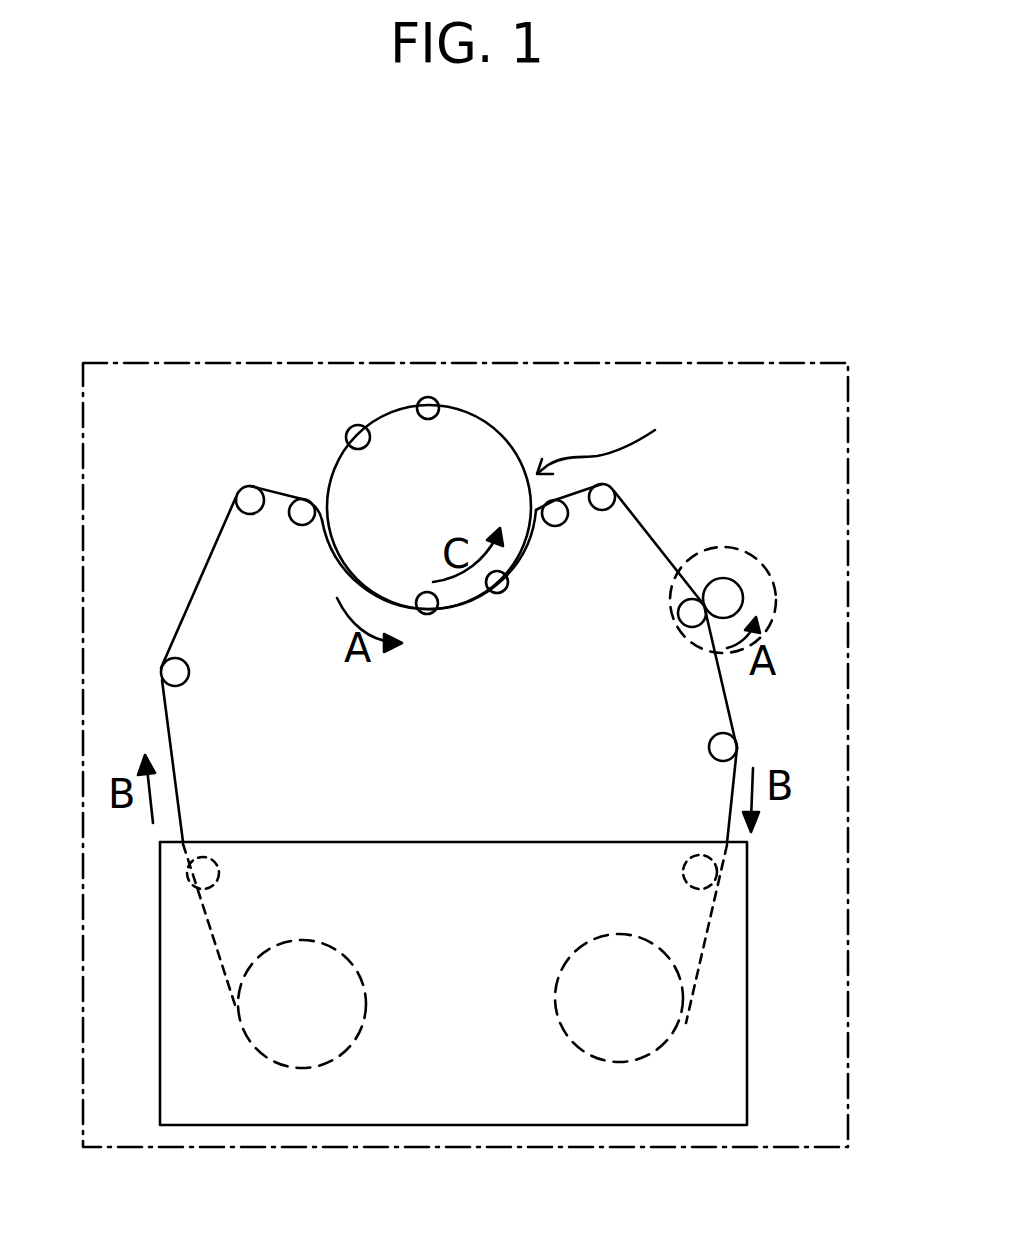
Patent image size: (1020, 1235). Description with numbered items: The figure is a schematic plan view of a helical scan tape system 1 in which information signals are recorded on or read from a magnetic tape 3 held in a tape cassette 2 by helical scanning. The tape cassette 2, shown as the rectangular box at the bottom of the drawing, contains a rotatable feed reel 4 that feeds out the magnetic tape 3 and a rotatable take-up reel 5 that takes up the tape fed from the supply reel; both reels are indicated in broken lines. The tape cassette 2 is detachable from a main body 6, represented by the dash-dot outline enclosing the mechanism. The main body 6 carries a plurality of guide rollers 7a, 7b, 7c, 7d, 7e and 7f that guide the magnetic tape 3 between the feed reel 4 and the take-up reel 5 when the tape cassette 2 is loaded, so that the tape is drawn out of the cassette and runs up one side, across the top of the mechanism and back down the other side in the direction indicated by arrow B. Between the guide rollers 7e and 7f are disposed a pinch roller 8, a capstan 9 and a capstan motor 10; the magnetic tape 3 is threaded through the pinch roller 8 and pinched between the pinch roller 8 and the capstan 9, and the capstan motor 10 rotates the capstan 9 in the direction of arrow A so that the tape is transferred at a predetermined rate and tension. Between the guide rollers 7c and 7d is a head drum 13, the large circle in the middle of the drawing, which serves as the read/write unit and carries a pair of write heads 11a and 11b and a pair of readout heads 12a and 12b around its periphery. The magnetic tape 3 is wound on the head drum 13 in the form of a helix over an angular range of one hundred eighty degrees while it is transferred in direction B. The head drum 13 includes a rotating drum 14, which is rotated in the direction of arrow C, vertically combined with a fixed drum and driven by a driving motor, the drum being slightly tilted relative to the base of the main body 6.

The helical scan tape system 1 is at (441, 336).
The tape cassette 2 is at (742, 980).
The magnetic tape 3 is at (213, 545).
The feed reel 4 is at (306, 936).
The take-up reel 5 is at (622, 935).
The main body 6 is at (662, 362).
The guide roller 7a is at (181, 686).
The guide roller 7b is at (238, 492).
The guide roller 7c is at (303, 498).
The guide roller 7d is at (552, 527).
The guide roller 7e is at (603, 511).
The guide roller 7f is at (710, 750).
The pinch roller 8 is at (689, 628).
The capstan 9 is at (722, 576).
The capstan motor 10 is at (752, 560).
The write head 11a is at (500, 594).
The write head 11b is at (348, 428).
The readout head 12a is at (427, 615).
The readout head 12b is at (440, 404).
The head drum 13 is at (617, 437).
The rotating drum 14 is at (510, 443).